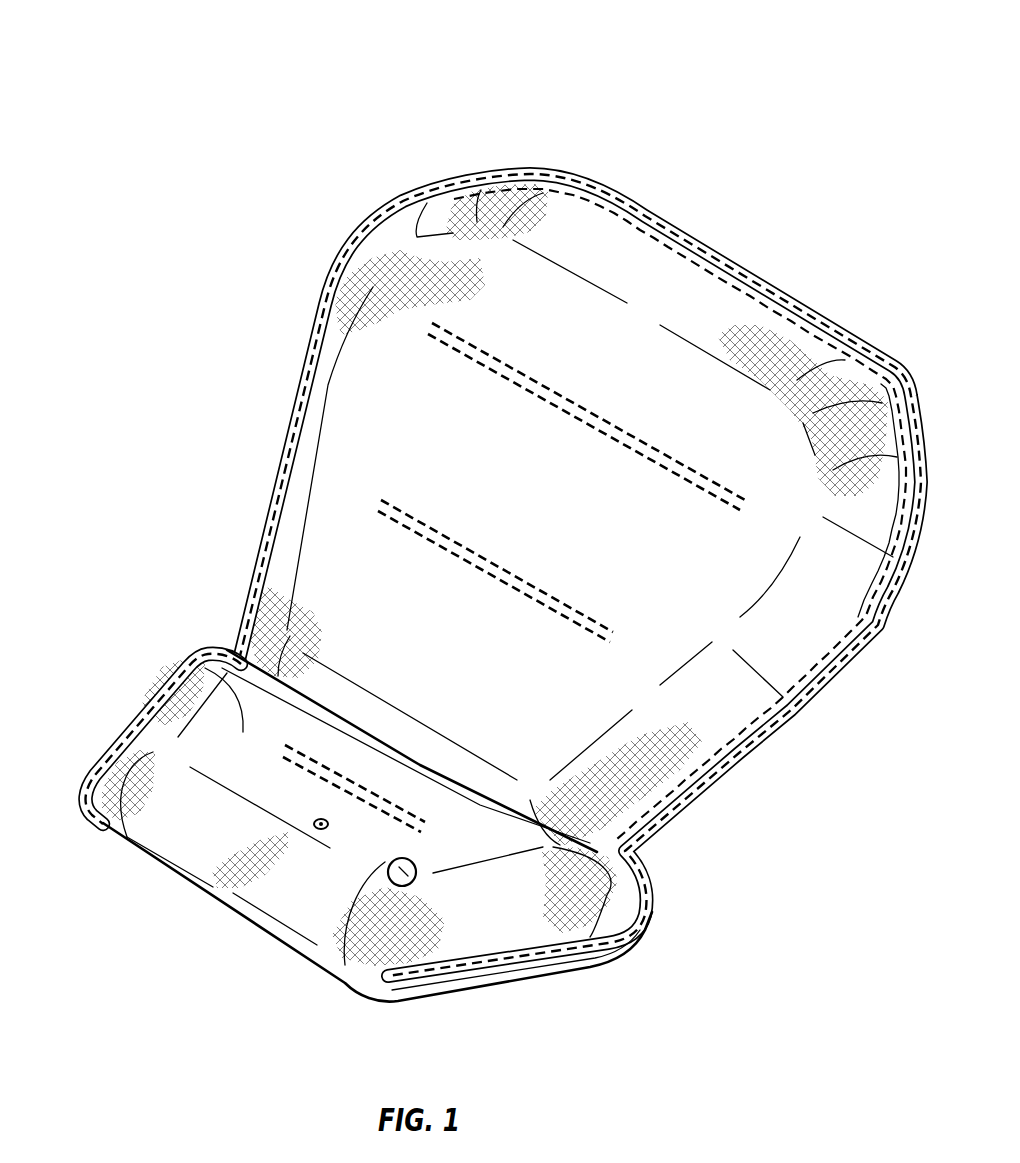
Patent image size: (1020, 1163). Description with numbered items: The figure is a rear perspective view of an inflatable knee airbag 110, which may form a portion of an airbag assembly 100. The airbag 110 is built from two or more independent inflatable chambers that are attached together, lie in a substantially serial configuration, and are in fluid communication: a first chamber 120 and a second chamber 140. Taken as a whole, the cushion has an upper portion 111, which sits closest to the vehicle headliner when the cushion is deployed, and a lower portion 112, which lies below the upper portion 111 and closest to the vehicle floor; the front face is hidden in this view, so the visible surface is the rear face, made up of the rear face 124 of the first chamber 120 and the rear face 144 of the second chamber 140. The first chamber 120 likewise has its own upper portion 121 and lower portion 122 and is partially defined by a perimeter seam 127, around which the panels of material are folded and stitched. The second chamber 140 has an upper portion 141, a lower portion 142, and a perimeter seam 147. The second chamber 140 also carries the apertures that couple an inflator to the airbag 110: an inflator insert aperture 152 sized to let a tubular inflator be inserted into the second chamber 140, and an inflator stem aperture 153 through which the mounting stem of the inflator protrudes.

The airbag assembly 100 is at (580, 491).
The inflatable knee airbag 110 is at (660, 178).
The upper portion 111 is at (503, 268).
The lower portion 112 is at (185, 667).
The first chamber 120 is at (760, 342).
The upper portion 121 is at (677, 290).
The lower portion 122 is at (343, 637).
The rear face 124 is at (383, 422).
The perimeter seam 127 is at (283, 390).
The second chamber 140 is at (312, 900).
The upper portion 141 is at (347, 755).
The lower portion 142 is at (207, 835).
The rear face 144 is at (233, 788).
The perimeter seam 147 is at (118, 742).
The inflator insert aperture 152 is at (415, 862).
The inflator stem aperture 153 is at (326, 828).